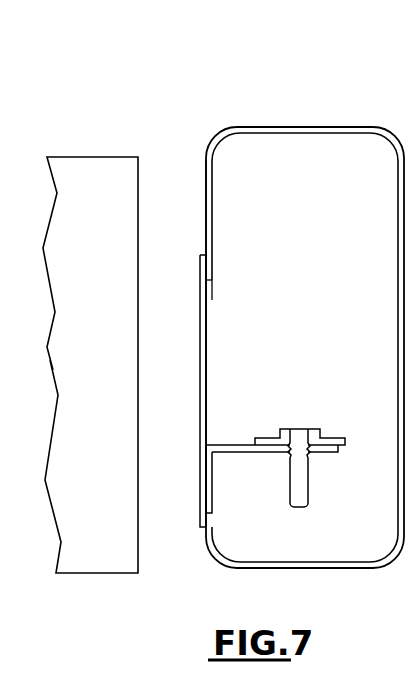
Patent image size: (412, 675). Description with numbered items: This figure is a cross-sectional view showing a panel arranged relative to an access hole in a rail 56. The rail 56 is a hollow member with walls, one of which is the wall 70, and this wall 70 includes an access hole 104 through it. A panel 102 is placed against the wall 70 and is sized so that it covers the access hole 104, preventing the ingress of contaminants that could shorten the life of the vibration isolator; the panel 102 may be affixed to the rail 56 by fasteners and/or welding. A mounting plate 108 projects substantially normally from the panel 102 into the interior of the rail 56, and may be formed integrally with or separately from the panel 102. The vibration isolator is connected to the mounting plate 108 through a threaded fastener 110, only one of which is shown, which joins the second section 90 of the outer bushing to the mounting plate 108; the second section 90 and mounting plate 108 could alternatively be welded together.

The rail 56 is at (325, 127).
The wall 70 is at (207, 233).
The access hole 104 is at (213, 296).
The panel 102 is at (200, 388).
The mounting plate 108 is at (240, 452).
The second section 90 is at (265, 437).
The threaded fastener 110 is at (300, 429).